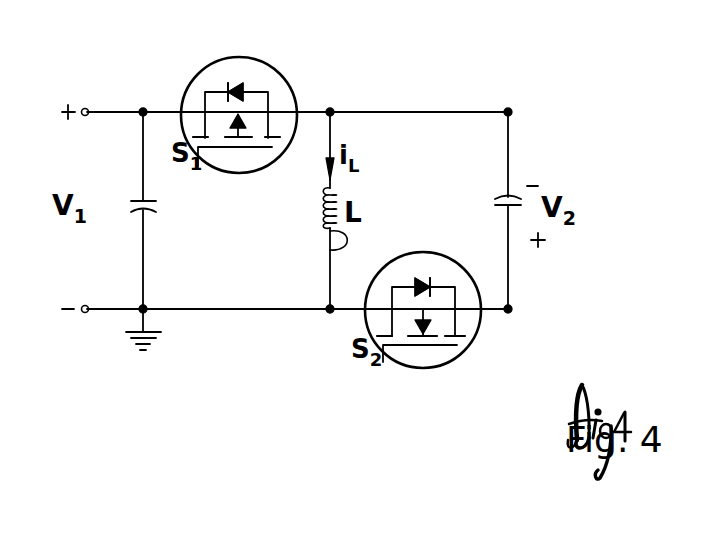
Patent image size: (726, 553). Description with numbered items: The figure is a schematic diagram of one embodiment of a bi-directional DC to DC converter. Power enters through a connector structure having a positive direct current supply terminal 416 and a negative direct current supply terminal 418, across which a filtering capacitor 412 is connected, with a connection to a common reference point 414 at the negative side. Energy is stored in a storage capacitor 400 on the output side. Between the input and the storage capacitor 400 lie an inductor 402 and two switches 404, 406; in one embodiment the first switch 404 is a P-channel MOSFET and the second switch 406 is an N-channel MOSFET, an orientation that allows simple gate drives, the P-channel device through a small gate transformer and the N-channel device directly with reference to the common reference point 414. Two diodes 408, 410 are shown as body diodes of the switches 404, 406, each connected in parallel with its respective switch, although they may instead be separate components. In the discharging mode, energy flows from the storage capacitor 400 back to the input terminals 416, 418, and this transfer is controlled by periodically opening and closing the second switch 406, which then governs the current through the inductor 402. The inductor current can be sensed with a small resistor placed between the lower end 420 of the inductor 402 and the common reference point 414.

The capacitor 400 is at (512, 191).
The inductor 402 is at (332, 188).
The switch 404 is at (262, 60).
The switch 406 is at (458, 356).
The diode 408 is at (236, 88).
The diode 410 is at (428, 284).
The filtering capacitor 412 is at (137, 214).
The common reference point 414 is at (136, 345).
The positive direct current supply terminal 416 is at (90, 108).
The negative direct current supply terminal 418 is at (87, 313).
The lower end of the inductor 420 is at (334, 246).